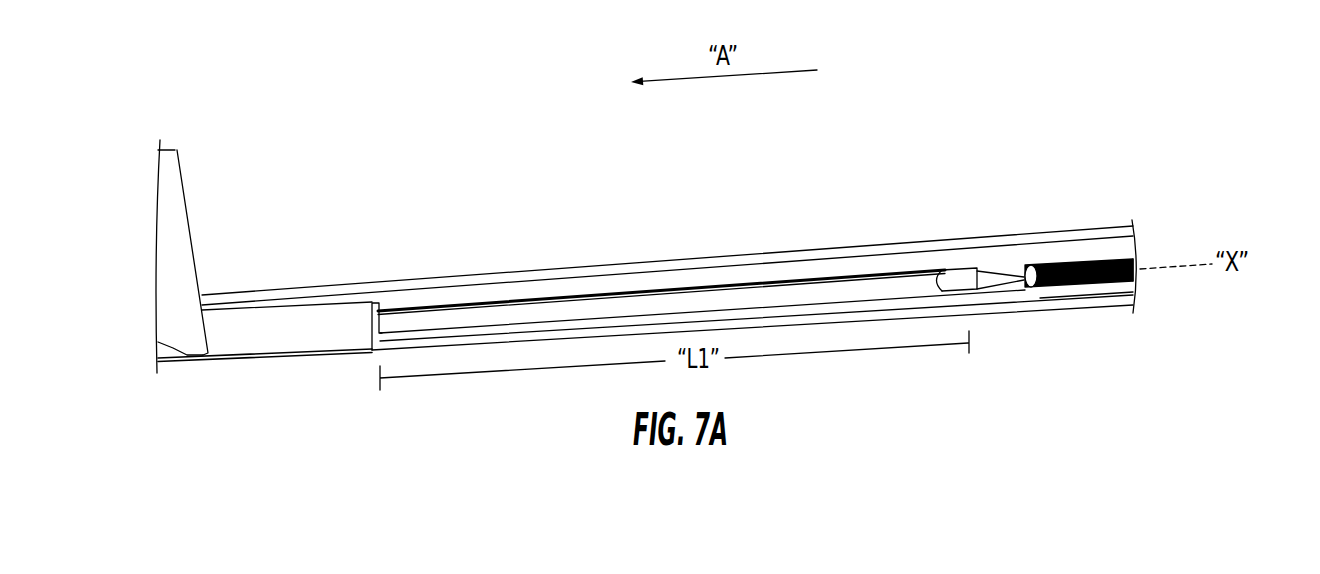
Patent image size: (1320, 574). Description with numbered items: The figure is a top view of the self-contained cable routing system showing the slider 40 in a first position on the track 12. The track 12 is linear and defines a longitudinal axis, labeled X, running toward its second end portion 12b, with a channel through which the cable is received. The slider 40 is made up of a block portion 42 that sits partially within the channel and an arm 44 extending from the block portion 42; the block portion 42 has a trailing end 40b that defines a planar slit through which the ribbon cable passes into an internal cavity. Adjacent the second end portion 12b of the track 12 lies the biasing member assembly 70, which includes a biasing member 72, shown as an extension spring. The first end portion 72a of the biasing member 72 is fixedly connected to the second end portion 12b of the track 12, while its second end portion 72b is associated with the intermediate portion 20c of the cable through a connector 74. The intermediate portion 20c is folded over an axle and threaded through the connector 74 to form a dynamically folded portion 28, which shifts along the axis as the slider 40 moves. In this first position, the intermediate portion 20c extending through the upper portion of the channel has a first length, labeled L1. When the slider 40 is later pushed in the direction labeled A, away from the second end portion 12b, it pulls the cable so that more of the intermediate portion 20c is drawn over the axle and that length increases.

The track 12 is at (597, 266).
The second end portion of the track 12b is at (1103, 293).
The intermediate portion of the cable 20c is at (852, 288).
The dynamically folded portion 28 is at (968, 267).
The slider 40 is at (203, 246).
The trailing end 40b is at (364, 347).
The block portion 42 is at (277, 340).
The arm 44 is at (186, 170).
The biasing member assembly 70 is at (1046, 296).
The biasing member 72 is at (1103, 267).
The first end portion of the biasing member 72a is at (1123, 290).
The second end portion of the biasing member 72b is at (1050, 267).
The connector 74 is at (995, 290).